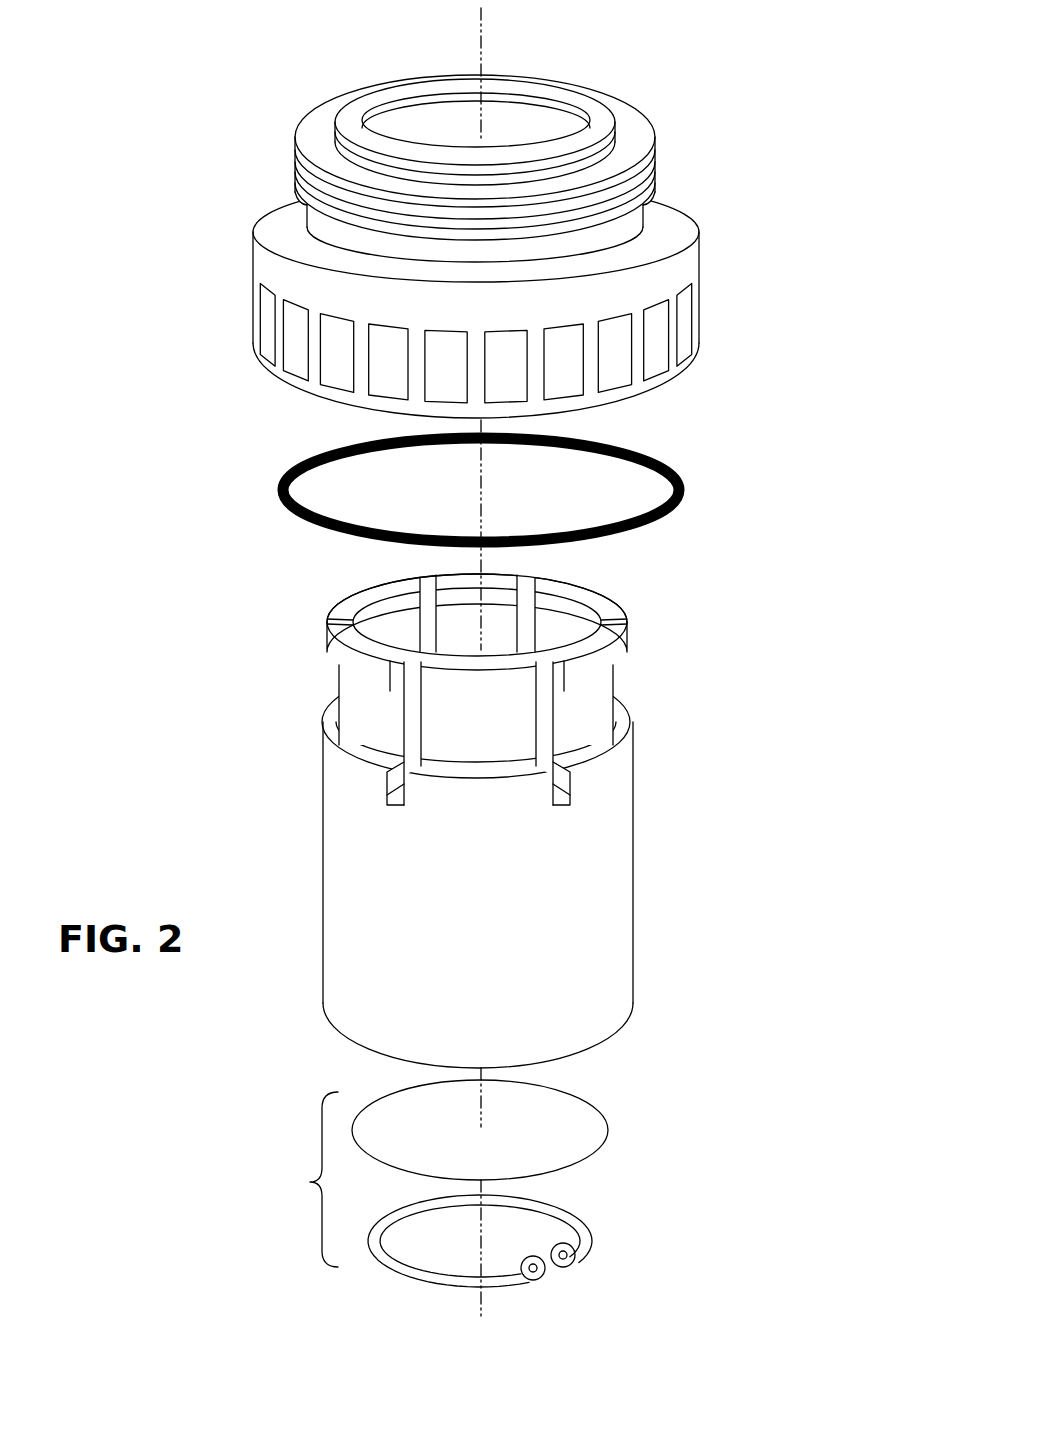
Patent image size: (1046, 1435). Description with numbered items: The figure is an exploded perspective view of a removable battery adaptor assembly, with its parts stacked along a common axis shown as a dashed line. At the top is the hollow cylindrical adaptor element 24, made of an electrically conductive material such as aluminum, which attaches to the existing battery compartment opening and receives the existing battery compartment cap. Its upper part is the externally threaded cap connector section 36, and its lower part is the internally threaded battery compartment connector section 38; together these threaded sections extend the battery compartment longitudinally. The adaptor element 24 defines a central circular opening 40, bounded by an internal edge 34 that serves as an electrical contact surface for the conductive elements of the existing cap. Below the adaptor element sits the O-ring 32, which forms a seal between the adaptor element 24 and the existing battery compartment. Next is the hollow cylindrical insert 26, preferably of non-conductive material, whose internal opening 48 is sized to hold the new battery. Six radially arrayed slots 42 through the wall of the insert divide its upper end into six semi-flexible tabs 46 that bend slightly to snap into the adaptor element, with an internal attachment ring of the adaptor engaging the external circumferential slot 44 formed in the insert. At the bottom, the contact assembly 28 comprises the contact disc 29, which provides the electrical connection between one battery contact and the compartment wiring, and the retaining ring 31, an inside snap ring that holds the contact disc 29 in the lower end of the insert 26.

The adaptor element 24 is at (496, 238).
The cylindrical insert 26 is at (507, 817).
The contact assembly 28 is at (459, 1179).
The contact disc 29 is at (597, 1125).
The retaining ring 31 is at (587, 1230).
The O-ring 32 is at (277, 488).
The internal edge 34 is at (602, 112).
The externally threaded cap connector section 36 is at (294, 166).
The internally threaded battery compartment connector section 38 is at (269, 312).
The central circular opening 40 is at (468, 118).
The slots 42 is at (405, 736).
The external circumferential slot 44 is at (587, 720).
The semi-flexible tabs 46 is at (607, 645).
The internal opening 48 is at (457, 622).